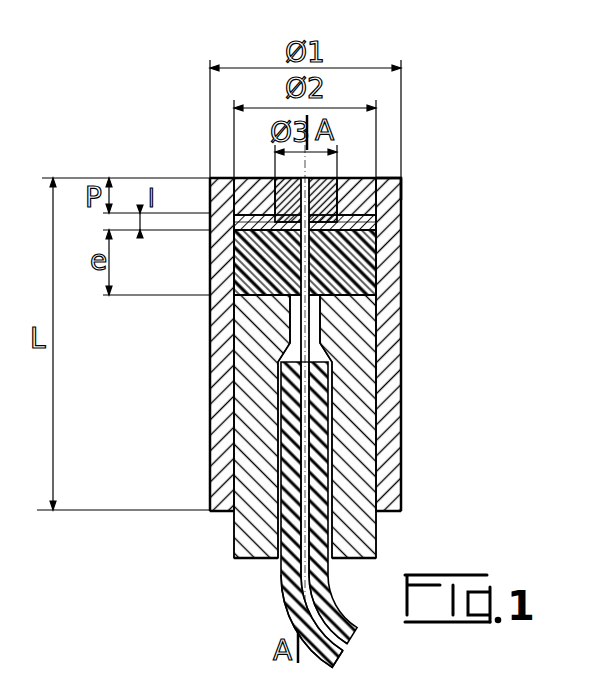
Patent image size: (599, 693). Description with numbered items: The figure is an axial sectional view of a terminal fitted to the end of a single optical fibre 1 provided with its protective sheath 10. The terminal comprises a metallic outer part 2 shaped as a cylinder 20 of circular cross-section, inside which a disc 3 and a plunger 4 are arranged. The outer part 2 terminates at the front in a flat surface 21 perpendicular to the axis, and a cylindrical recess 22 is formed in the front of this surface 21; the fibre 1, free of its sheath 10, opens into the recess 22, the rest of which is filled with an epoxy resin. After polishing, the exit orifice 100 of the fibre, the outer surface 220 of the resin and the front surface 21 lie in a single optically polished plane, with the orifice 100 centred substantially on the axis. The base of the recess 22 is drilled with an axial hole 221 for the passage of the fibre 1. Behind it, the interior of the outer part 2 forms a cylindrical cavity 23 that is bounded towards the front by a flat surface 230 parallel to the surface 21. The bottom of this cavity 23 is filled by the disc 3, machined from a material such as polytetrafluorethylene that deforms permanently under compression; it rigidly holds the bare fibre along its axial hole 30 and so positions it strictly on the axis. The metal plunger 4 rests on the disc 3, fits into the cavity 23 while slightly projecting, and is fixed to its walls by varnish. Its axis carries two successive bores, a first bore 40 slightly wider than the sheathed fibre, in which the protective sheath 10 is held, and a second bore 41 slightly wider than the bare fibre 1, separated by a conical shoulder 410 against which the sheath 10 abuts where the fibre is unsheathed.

The exit orifice of the fibre 100 is at (292, 177).
The outer surface of the resin 220 is at (335, 180).
The front flat surface 21 is at (404, 182).
The cylindrical recess 22 is at (358, 200).
The axial hole 221 is at (402, 235).
The flat surface of the cavity 230 is at (245, 225).
The outer part 2 is at (245, 288).
The disc 3 is at (360, 270).
The axial hole of the disc 30 is at (377, 296).
The cylinder 20 is at (220, 360).
The cylindrical cavity 23 is at (232, 390).
The plunger 4 is at (242, 443).
The second bore 41 is at (322, 305).
The conical shoulder 410 is at (312, 345).
The optical fibre 1 is at (326, 395).
The first bore 40 is at (315, 465).
The protective sheath 10 is at (282, 578).